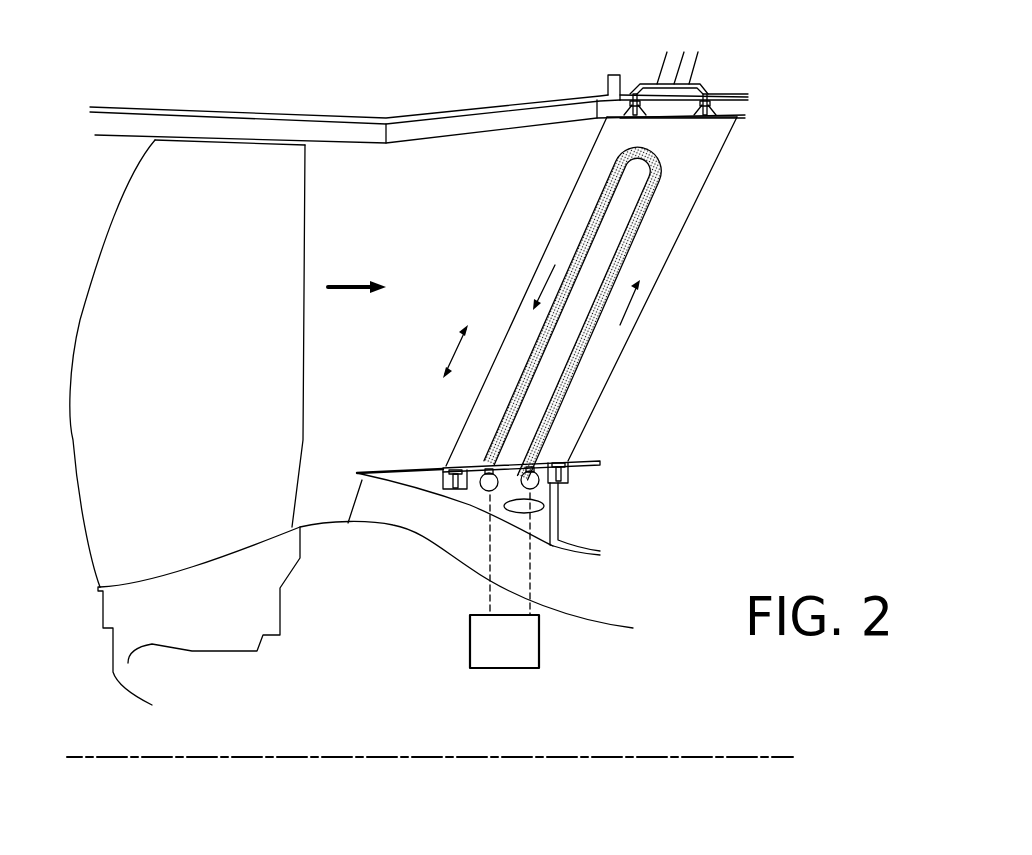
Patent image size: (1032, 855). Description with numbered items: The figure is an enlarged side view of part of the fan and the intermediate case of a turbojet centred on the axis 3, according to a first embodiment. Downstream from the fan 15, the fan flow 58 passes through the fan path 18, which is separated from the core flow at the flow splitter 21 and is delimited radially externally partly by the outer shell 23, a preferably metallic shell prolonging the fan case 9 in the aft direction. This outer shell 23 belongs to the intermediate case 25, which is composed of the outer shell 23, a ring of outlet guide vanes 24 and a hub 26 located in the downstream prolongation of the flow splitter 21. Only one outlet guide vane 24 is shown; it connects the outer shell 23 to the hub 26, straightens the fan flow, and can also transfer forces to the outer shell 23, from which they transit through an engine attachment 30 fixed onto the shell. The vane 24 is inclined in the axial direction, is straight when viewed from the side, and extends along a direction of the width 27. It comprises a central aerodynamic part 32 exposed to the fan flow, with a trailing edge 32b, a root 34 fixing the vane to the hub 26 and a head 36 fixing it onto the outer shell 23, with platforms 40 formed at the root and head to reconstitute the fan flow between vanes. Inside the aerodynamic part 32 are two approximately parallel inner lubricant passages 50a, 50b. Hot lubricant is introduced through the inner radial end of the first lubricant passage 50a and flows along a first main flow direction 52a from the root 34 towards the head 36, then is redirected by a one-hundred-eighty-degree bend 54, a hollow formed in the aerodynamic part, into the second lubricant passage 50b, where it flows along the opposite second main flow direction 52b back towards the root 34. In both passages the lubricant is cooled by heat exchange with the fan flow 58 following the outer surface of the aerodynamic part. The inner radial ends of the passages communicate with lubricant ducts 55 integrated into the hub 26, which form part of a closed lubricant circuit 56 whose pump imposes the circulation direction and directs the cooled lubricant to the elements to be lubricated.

The axis 3 is at (780, 756).
The fan case 9 is at (182, 107).
The fan 15 is at (98, 300).
The fan path 18 is at (341, 397).
The flow splitter 21 is at (390, 477).
The outer shell 23 is at (712, 91).
The outlet guide vane 24 is at (629, 291).
The intermediate case 25 is at (438, 184).
The hub 26 is at (577, 506).
The direction of the width 27 is at (448, 350).
The engine attachment 30 is at (681, 46).
The aerodynamic part 32 is at (545, 244).
The trailing edge 32b is at (655, 289).
The root 34 is at (570, 468).
The head 36 is at (725, 110).
The platform 40 is at (670, 116).
The first lubricant passage 50a is at (595, 345).
The second lubricant passage 50b is at (503, 428).
The first main flow direction 52a is at (625, 310).
The second main flow direction 52b is at (547, 283).
The bend 54 is at (660, 160).
The lubricant ducts 55 is at (526, 489).
The lubricant circuit 56 is at (497, 638).
The fan flow 58 is at (355, 293).